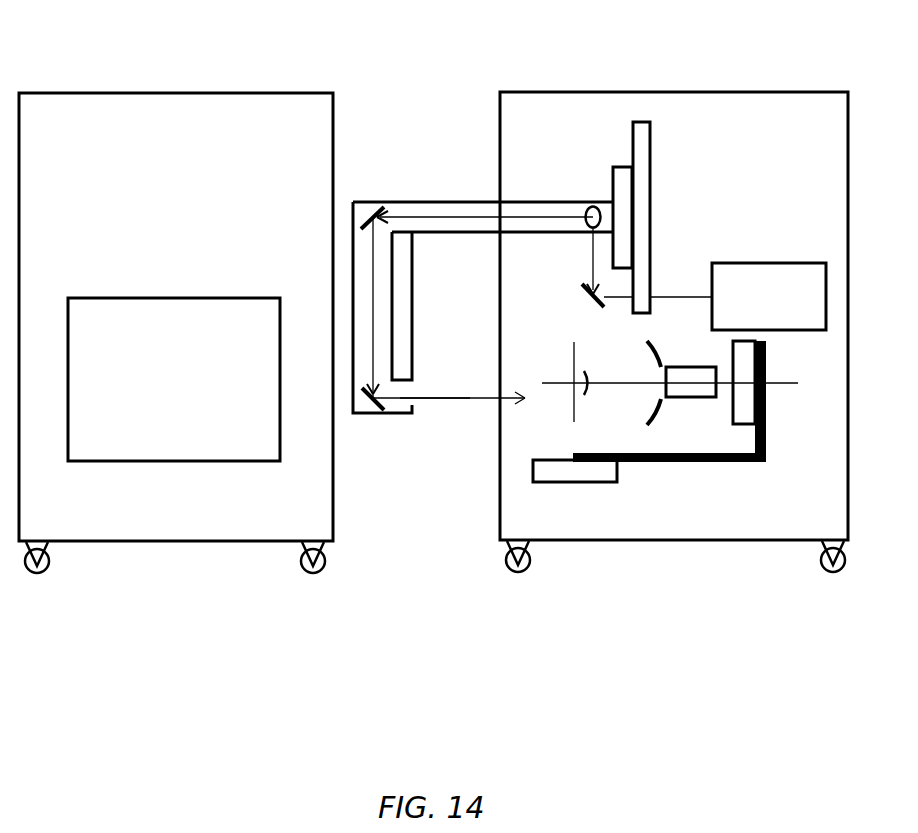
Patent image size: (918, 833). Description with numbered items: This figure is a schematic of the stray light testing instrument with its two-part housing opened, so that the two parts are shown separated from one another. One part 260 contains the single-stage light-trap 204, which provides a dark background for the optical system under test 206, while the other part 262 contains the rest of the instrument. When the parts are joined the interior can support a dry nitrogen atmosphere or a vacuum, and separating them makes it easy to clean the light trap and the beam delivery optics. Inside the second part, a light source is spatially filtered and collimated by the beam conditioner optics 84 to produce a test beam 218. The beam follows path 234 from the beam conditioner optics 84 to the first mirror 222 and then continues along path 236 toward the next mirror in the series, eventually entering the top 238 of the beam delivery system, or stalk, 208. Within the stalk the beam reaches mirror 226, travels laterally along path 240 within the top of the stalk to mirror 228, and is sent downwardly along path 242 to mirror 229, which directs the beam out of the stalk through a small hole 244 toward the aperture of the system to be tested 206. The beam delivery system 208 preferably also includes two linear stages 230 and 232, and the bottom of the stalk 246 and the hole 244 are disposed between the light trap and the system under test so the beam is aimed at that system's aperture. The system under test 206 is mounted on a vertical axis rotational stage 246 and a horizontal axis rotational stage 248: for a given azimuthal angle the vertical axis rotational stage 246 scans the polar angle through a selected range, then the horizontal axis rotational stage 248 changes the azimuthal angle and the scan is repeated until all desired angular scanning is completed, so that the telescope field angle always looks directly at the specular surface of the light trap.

The first housing part 260 is at (160, 92).
The single-stage light-trap 204 is at (212, 388).
The second housing part 262 is at (660, 92).
The beam delivery system 208 is at (482, 299).
The lateral beam path 240 is at (455, 210).
The top of the beam delivery stalk 238 is at (462, 235).
The downward beam path 242 is at (378, 308).
The mirror 228 is at (381, 208).
The mirror 229 is at (372, 414).
The test beam 218 is at (456, 400).
The small hole 244 is at (432, 392).
The mirror 226 is at (594, 206).
The linear stage 232 is at (620, 165).
The linear stage 230 is at (652, 128).
The beam path 236 is at (591, 258).
The first mirror 222 is at (590, 300).
The beam path 234 is at (683, 292).
The beam conditioner optics 84 is at (778, 312).
The optical system under test 206 is at (681, 484).
The horizontal axis rotational stage 248 is at (746, 408).
The vertical axis rotational stage 246 is at (575, 492).